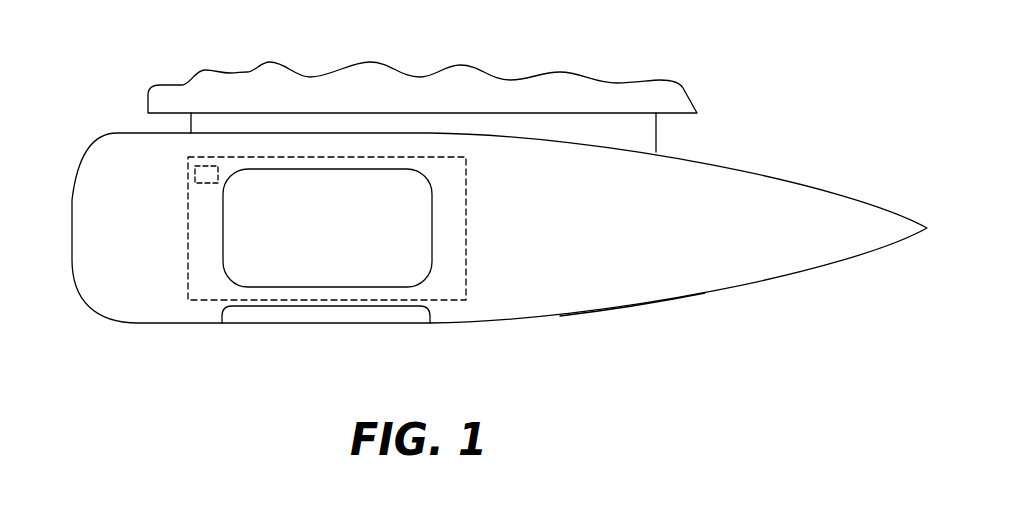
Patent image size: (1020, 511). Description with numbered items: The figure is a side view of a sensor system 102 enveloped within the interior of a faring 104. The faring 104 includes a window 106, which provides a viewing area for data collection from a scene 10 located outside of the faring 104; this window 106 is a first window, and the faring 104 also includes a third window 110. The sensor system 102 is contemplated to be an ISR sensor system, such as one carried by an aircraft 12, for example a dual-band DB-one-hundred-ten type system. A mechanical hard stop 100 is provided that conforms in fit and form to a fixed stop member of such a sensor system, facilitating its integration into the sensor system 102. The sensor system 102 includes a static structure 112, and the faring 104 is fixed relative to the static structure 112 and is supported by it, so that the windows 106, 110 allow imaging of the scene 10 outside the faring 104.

The scene 10 is at (53, 347).
The aircraft 12 is at (552, 95).
The mechanical hard stop 100 is at (195, 175).
The sensor system 102 is at (118, 362).
The faring 104 is at (608, 313).
The window 106 is at (218, 255).
The third window 110 is at (283, 317).
The static structure 112 is at (466, 248).